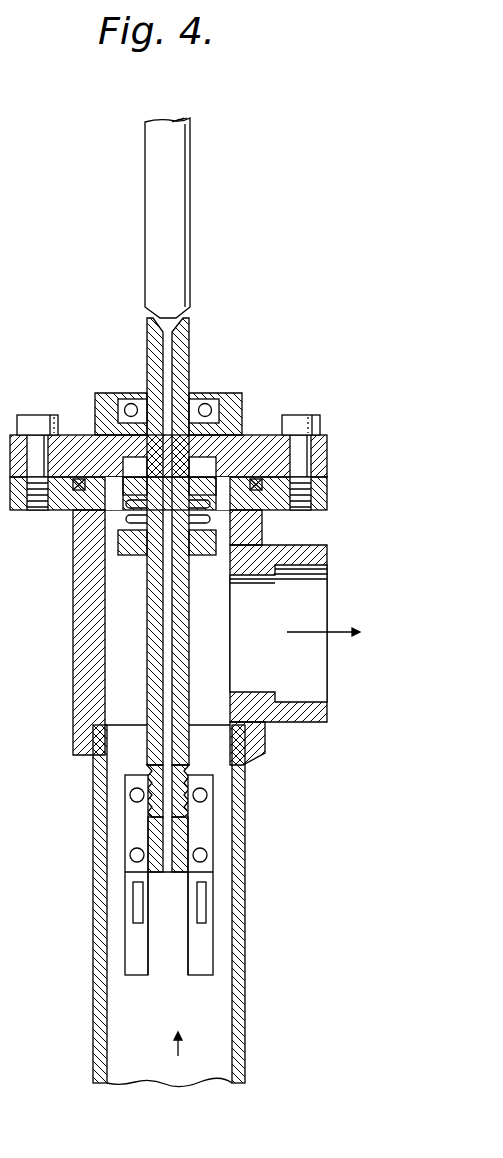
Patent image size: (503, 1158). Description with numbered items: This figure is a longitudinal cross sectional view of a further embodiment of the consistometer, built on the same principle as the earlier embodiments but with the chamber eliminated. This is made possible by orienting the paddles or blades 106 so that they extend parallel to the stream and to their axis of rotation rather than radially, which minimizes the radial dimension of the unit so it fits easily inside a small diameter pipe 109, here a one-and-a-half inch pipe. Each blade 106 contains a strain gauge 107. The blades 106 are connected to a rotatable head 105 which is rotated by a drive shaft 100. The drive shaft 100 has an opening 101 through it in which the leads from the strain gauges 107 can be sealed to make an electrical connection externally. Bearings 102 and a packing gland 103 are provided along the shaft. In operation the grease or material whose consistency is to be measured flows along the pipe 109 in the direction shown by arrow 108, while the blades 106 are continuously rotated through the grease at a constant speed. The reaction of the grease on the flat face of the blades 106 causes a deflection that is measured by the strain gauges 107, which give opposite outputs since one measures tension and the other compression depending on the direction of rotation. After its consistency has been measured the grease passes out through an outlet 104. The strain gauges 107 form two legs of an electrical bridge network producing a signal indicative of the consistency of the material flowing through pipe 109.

The drive shaft 100 is at (192, 150).
The opening 101 is at (188, 313).
The bearings 102 is at (198, 392).
The packing gland 103 is at (212, 557).
The outlet 104 is at (317, 608).
The rotatable head 105 is at (213, 826).
The blades 106 is at (200, 976).
The strain gauge 107 is at (197, 900).
The arrow 108 is at (178, 1062).
The pipe 109 is at (94, 1003).